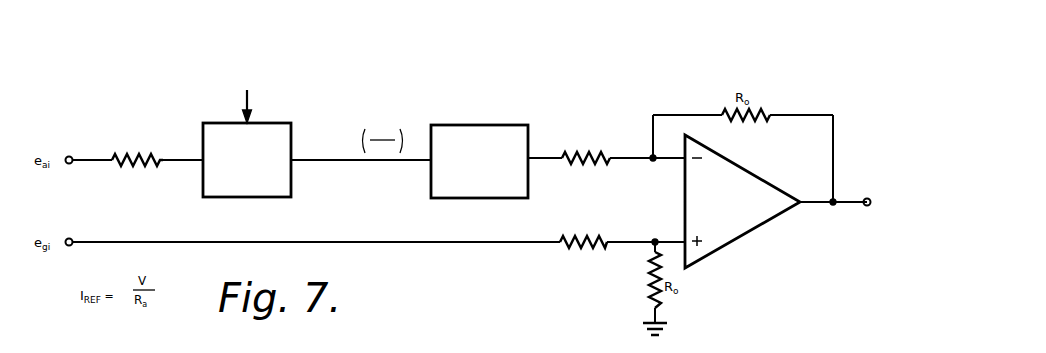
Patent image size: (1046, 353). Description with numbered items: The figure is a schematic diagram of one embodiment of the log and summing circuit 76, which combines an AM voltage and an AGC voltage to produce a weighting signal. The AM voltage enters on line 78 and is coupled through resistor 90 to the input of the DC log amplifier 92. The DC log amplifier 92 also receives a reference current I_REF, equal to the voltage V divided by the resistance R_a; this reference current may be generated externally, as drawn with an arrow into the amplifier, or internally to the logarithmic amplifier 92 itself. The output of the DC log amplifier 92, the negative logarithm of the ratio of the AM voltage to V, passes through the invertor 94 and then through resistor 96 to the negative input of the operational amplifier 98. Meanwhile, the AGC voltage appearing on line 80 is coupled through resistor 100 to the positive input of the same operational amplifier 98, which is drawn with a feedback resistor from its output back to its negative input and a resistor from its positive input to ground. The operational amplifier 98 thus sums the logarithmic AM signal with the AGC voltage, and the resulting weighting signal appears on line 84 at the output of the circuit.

The log and summing circuit 76 is at (366, 204).
The line 78 is at (108, 160).
The line 80 is at (118, 241).
The line 84 is at (850, 207).
The resistor 90 is at (144, 168).
The DC log amplifier 92 is at (211, 199).
The invertor 94 is at (476, 125).
The resistor 96 is at (582, 166).
The operational amplifier 98 is at (757, 228).
The resistor 100 is at (580, 250).